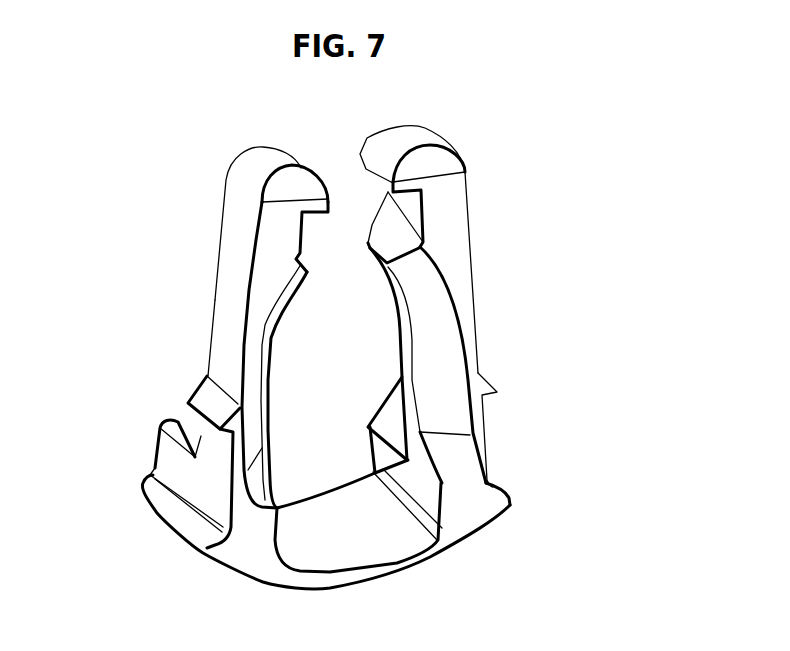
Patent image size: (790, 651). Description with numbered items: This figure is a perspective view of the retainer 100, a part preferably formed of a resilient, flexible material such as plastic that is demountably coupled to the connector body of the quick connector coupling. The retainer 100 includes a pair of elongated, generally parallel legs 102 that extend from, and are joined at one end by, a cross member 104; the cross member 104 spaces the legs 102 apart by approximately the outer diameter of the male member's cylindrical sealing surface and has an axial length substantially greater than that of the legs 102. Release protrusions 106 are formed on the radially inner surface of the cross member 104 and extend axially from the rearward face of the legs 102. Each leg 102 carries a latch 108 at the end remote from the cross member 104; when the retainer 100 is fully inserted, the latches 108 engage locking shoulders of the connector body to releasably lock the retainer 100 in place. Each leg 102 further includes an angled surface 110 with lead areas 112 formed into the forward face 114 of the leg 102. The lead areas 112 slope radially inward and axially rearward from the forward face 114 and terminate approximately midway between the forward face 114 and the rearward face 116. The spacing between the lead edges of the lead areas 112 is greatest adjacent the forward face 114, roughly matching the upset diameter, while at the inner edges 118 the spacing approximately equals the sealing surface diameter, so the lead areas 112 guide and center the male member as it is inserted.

The retainer 100 is at (497, 153).
The legs 102 is at (238, 282).
The cross member 104 is at (372, 577).
The release protrusions 106 is at (158, 452).
The latch 108 is at (375, 145).
The angled surface 110 is at (442, 350).
The lead areas 112 is at (455, 323).
The forward face 114 is at (468, 490).
The rearward face 116 is at (207, 318).
The inner edges 118 is at (388, 267).